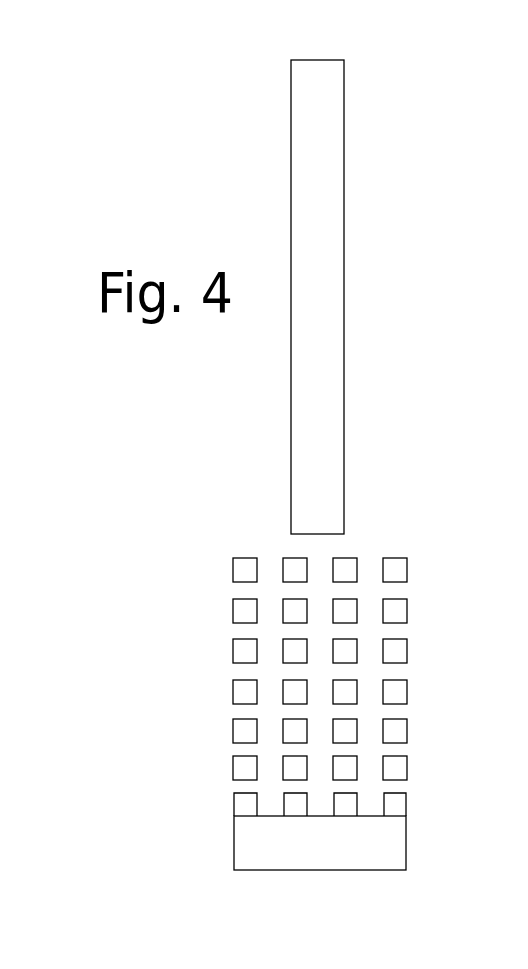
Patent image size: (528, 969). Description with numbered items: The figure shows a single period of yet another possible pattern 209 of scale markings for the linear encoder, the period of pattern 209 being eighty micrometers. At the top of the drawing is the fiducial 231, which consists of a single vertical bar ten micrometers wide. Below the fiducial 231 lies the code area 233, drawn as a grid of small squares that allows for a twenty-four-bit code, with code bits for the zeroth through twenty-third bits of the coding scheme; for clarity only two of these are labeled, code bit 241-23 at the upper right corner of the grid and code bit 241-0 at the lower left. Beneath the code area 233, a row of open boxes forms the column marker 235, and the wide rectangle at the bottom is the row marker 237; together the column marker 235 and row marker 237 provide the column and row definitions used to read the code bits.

The pattern 209 is at (400, 327).
The fiducial 231 is at (305, 208).
The code area 233 is at (336, 668).
The column marker 235 is at (432, 806).
The row marker 237 is at (383, 870).
The code bit 241-23 is at (403, 558).
The code bit 241-0 is at (237, 763).